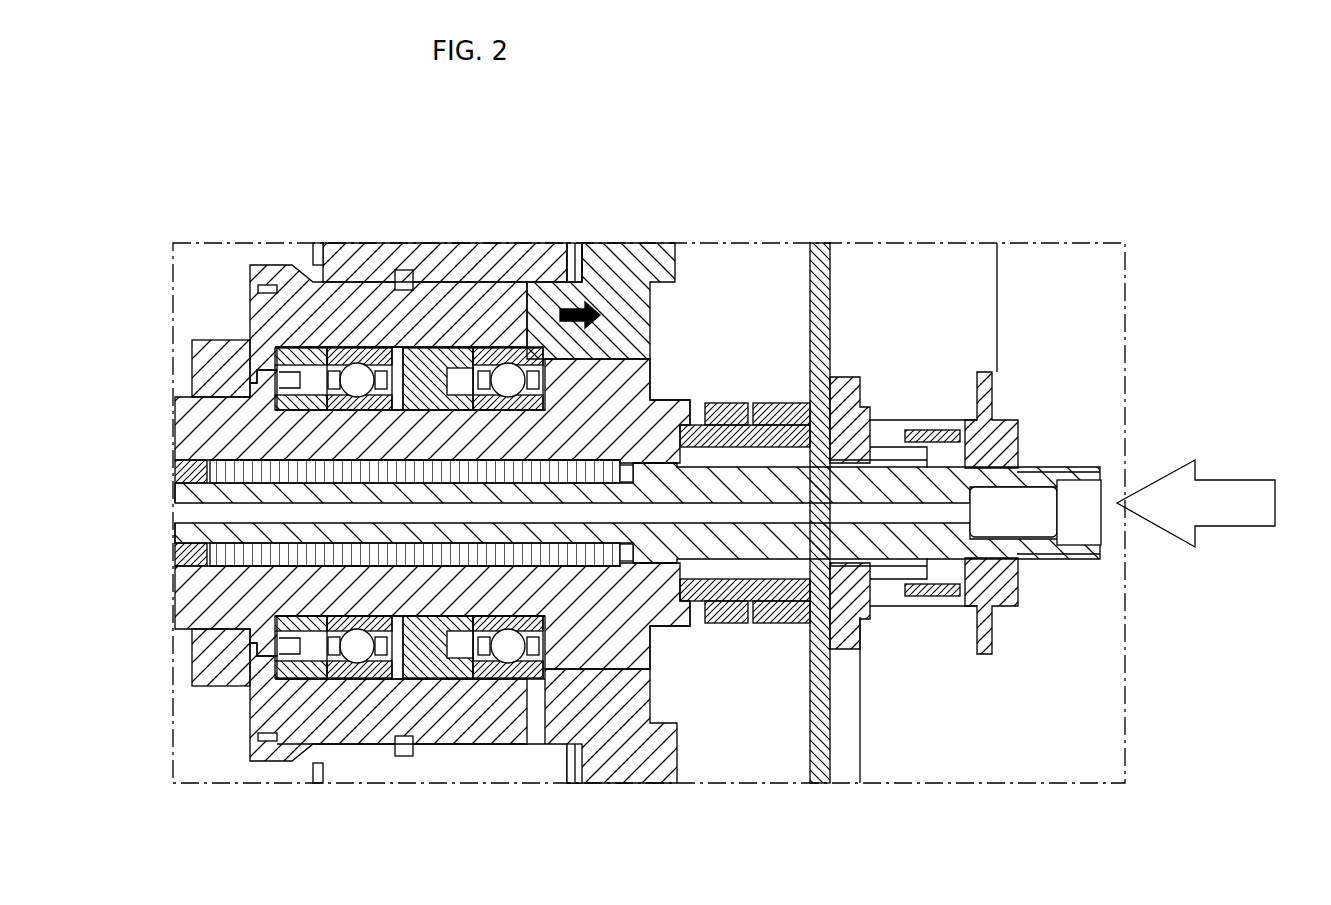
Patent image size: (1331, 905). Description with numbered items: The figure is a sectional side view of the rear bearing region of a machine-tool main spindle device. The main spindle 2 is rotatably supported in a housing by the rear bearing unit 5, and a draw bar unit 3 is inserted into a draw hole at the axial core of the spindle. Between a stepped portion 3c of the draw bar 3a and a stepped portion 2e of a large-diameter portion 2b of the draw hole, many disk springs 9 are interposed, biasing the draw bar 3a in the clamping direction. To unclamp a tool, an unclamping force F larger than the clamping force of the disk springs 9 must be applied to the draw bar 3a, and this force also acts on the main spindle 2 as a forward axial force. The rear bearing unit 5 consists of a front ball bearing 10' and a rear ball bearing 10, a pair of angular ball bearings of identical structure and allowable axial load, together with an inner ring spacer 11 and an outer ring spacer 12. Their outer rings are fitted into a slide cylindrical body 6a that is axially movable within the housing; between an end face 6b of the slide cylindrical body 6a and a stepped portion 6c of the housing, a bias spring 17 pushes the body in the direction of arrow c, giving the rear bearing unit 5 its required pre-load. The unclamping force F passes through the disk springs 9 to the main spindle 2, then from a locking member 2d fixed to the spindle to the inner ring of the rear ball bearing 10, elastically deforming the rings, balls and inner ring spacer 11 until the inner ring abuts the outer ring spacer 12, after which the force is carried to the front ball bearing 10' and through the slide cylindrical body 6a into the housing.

The main spindle 2 is at (187, 601).
The large-diameter portion 2b is at (293, 446).
The locking member 2d is at (647, 380).
The stepped portion 2e is at (188, 459).
The draw bar unit 3 is at (165, 518).
The draw bar 3a is at (172, 497).
The stepped portion 3c is at (605, 458).
The rear bearing unit 5 is at (467, 333).
The slide cylindrical body 6a is at (680, 268).
The end face 6b is at (560, 278).
The stepped portion 6c is at (580, 271).
The disk springs 9 is at (237, 460).
The rear ball bearing 10 is at (508, 428).
The front ball bearing 10' is at (388, 469).
The inner ring spacer 11 is at (393, 347).
The outer ring spacer 12 is at (443, 345).
The bias spring 17 is at (573, 263).
The direction of arrow c is at (548, 290).
The unclamping force F is at (1214, 503).